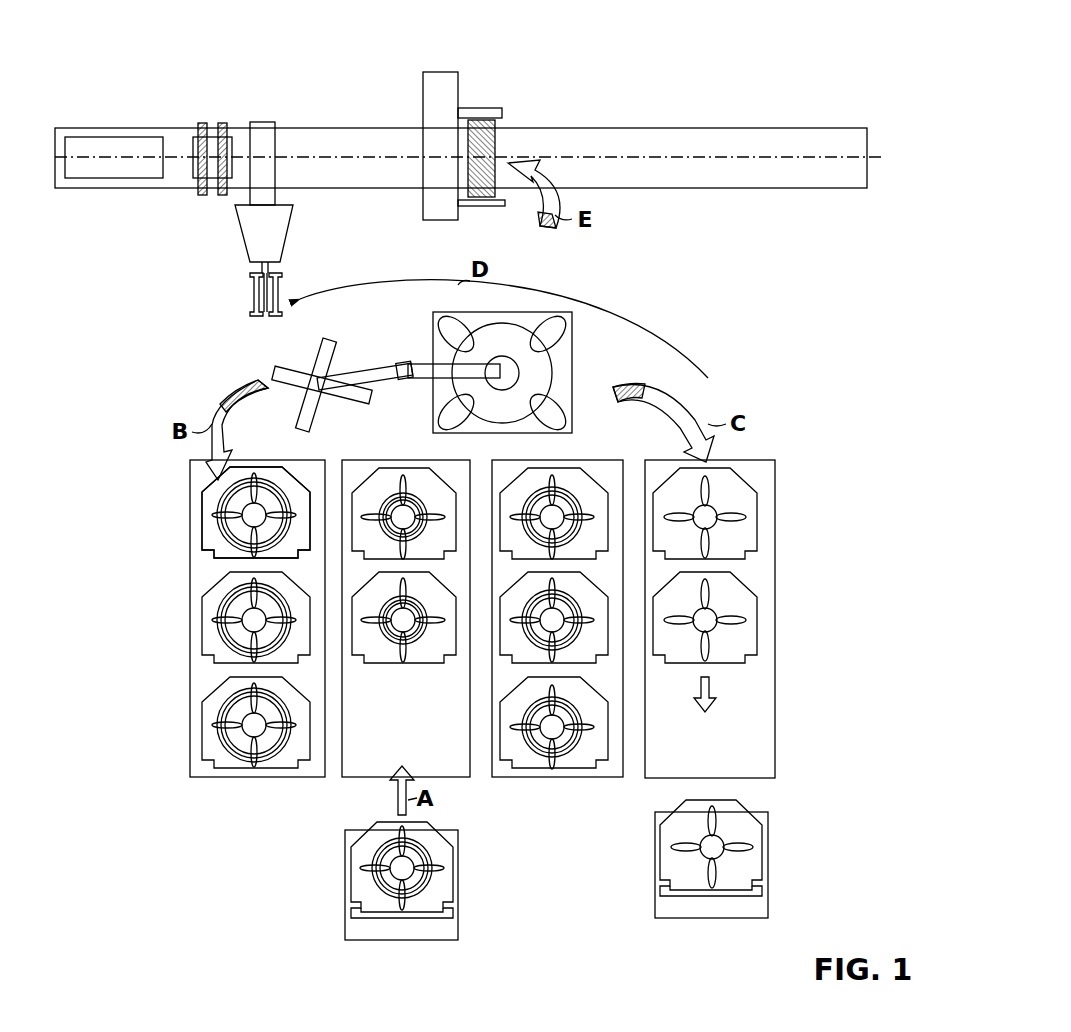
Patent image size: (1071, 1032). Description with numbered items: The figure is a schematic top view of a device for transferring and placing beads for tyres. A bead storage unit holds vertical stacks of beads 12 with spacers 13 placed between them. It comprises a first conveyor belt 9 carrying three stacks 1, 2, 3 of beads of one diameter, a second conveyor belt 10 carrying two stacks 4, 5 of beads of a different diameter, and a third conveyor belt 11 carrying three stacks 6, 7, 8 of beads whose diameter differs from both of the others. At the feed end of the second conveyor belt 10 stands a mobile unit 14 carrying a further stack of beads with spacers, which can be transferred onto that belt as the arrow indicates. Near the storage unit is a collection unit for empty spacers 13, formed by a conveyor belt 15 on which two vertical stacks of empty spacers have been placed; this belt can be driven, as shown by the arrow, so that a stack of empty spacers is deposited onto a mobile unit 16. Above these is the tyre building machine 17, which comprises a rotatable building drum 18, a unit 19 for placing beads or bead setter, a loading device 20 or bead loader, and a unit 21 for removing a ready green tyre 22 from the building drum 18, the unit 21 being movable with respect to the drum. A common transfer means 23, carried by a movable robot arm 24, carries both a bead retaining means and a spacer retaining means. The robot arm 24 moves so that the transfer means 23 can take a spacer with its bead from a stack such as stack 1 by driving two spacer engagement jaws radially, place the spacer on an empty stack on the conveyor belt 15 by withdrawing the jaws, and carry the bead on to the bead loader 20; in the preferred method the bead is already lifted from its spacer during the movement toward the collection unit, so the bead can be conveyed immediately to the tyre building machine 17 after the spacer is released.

The stack 1 is at (213, 523).
The stack 2 is at (218, 643).
The stack 3 is at (218, 746).
The stack 4 is at (371, 490).
The stack 5 is at (385, 655).
The stack 6 is at (584, 486).
The stack 7 is at (587, 598).
The stack 8 is at (587, 702).
The first conveyor belt 9 is at (220, 645).
The second conveyor belt 10 is at (399, 624).
The third conveyor belt 11 is at (567, 634).
The beads 12 is at (222, 500).
The spacers 13 is at (215, 530).
The mobile unit 14 is at (357, 931).
The conveyor belt 15 is at (765, 752).
The mobile unit 16 is at (755, 912).
The tyre building machine 17 is at (178, 118).
The rotatable building drum 18 is at (83, 152).
The unit for placing beads 19 is at (218, 125).
The loading device 20 is at (277, 229).
The unit for removing a ready green tyre 21 is at (438, 80).
The green tyre 22 is at (488, 140).
The common transfer means 23 is at (288, 374).
The movable robot arm 24 is at (395, 368).